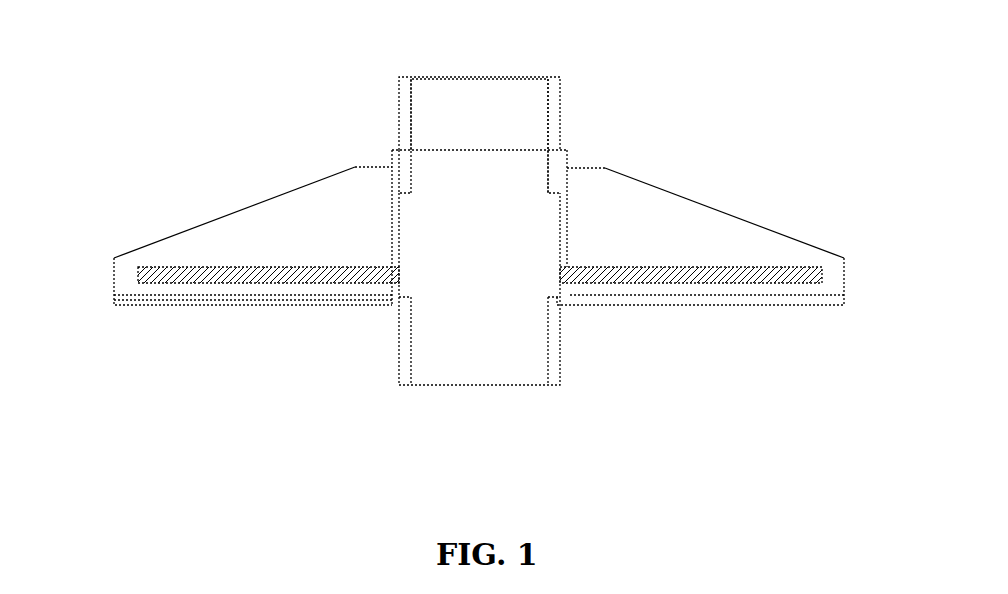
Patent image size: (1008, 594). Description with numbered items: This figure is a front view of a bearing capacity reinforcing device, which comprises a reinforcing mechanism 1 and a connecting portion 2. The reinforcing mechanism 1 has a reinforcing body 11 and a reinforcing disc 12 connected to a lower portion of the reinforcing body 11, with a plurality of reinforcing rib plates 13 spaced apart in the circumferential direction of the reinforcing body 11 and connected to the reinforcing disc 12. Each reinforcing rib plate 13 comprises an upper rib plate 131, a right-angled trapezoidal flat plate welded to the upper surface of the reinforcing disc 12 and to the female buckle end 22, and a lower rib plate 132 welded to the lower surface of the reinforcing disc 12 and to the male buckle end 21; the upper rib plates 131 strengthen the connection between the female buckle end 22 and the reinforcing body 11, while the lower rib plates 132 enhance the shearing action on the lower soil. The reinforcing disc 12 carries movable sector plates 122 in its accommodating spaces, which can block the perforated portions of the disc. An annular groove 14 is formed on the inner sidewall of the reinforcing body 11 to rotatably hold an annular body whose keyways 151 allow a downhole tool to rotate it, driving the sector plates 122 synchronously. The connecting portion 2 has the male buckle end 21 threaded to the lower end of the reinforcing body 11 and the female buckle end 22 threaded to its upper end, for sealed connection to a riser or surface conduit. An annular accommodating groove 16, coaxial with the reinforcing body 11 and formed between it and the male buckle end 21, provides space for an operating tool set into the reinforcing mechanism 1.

The reinforcing mechanism 1 is at (898, 107).
The reinforcing body 11 is at (565, 165).
The reinforcing disc 12 is at (785, 267).
The sector plate 122 is at (649, 273).
The reinforcing rib plate 13 is at (187, 127).
The upper rib plate 131 is at (258, 230).
The lower rib plate 132 is at (215, 300).
The annular groove 14 is at (565, 283).
The keyway 151 is at (563, 268).
The annular accommodating groove 16 is at (553, 208).
The connecting portion 2 is at (53, 75).
The male buckle end 21 is at (405, 338).
The female buckle end 22 is at (407, 120).